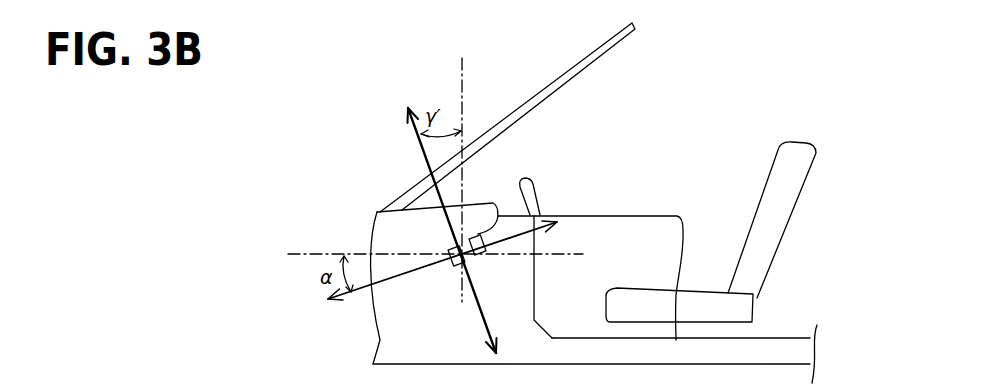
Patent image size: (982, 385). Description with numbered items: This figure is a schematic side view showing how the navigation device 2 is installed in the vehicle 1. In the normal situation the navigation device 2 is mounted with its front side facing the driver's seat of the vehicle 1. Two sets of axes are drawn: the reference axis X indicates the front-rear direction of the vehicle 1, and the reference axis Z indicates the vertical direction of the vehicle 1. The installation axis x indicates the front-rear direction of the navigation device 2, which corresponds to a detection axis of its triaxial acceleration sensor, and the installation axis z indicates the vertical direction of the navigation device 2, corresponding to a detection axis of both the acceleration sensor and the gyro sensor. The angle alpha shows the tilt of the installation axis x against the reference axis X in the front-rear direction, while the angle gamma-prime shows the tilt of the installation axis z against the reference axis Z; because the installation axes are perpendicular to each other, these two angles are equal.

The vehicle 1 is at (683, 125).
The navigation device 2 is at (498, 216).
The reference axis X is at (304, 256).
The reference axis Z is at (463, 80).
The installation axis x is at (362, 290).
The installation axis z is at (423, 164).